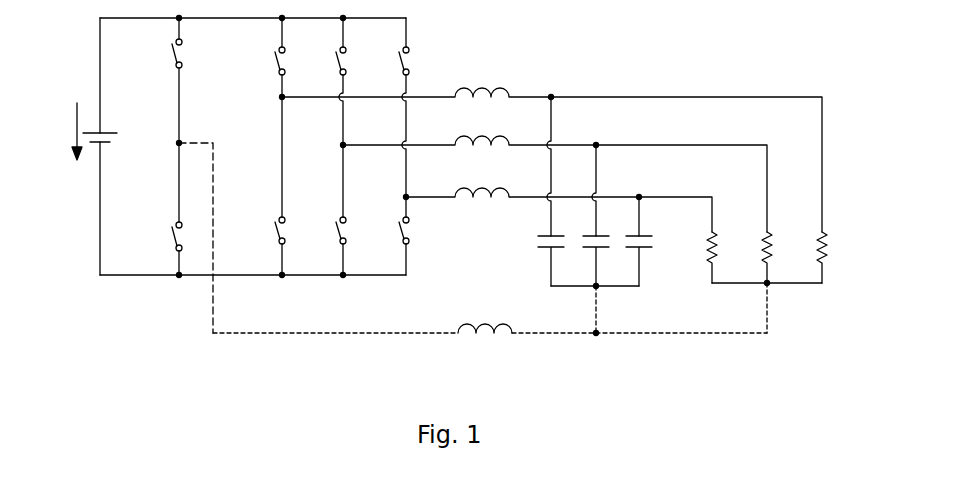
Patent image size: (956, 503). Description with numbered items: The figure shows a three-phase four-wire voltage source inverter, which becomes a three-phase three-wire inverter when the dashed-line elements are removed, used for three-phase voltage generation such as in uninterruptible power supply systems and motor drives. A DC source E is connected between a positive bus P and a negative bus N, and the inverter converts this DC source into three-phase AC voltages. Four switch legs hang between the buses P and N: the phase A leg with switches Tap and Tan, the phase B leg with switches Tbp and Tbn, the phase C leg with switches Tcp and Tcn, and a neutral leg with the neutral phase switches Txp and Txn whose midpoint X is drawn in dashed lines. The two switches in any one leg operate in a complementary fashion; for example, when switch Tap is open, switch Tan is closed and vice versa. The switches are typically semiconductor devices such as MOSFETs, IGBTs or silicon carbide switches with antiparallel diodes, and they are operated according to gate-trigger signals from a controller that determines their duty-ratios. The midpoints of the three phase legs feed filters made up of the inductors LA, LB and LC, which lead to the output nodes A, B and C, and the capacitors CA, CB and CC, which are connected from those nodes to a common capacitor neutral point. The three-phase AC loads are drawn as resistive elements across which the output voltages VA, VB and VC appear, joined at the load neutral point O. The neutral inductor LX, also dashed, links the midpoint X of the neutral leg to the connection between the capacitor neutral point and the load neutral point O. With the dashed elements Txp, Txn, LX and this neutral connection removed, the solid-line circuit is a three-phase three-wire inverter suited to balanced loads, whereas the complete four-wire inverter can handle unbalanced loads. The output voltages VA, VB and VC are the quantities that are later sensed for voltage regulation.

The positive DC bus P is at (240, 13).
The negative DC bus N is at (241, 273).
The DC voltage source E is at (86, 146).
The neutral-leg midpoint node X is at (195, 223).
The neutral phase switch Txp is at (160, 80).
The neutral phase switch Txn is at (160, 209).
The switch Tap is at (264, 57).
The switch Tan is at (264, 186).
The switch Tbp is at (325, 81).
The switch Tbn is at (325, 210).
The switch Tcp is at (389, 107).
The switch Tcn is at (389, 236).
The inductor LA is at (552, 143).
The inductor LB is at (555, 168).
The inductor LC is at (559, 194).
The neutral inductor LX is at (490, 313).
The phase A output node A is at (554, 151).
The phase B output node B is at (599, 177).
The phase C output node C is at (642, 202).
The capacitor CA is at (542, 261).
The capacitor CB is at (590, 261).
The capacitor CC is at (648, 261).
The three-phase output voltage VA is at (835, 257).
The three-phase output voltage VB is at (779, 257).
The three-phase output voltage VC is at (724, 257).
The load neutral node O is at (767, 307).